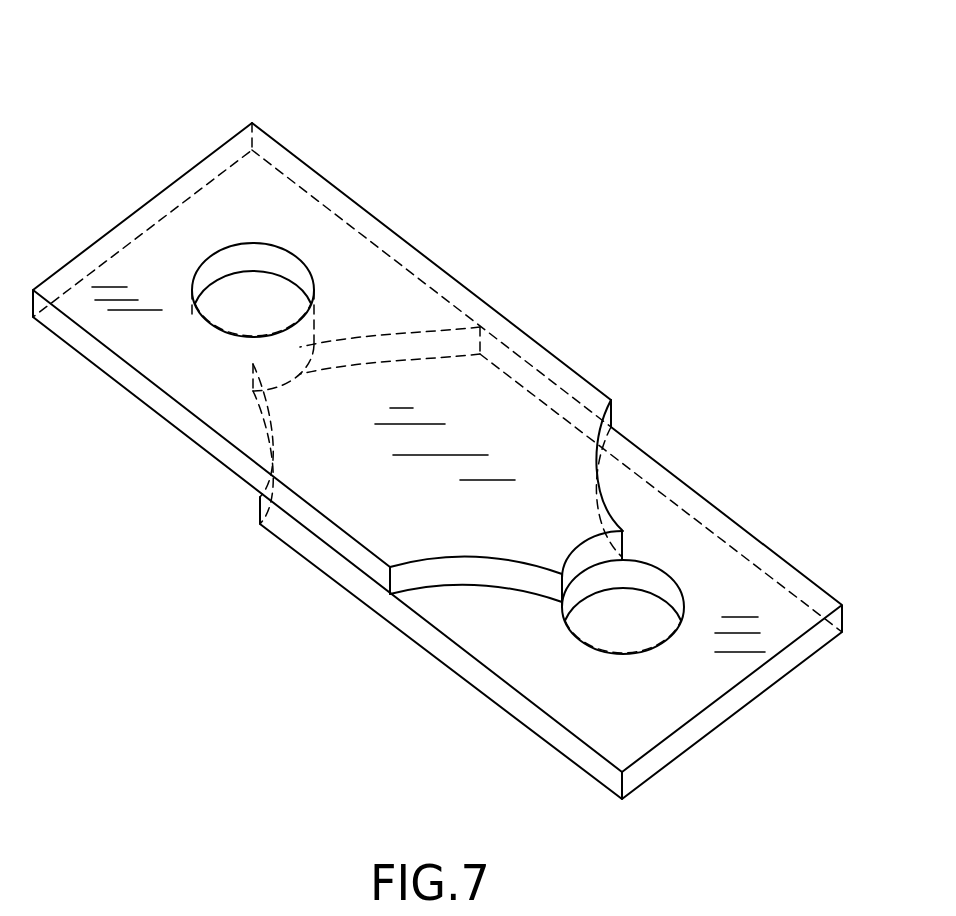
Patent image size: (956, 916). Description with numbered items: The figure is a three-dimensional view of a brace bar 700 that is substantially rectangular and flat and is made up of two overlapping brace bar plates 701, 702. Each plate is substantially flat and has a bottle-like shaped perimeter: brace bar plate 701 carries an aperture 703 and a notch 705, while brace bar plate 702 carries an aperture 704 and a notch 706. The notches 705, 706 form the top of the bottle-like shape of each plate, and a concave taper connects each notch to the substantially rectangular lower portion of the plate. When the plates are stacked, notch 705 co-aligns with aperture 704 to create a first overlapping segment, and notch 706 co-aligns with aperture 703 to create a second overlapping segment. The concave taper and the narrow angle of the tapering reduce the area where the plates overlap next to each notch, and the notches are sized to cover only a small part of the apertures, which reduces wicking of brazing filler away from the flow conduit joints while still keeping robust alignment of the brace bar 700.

The brace bar 700 is at (435, 409).
The brace bar plate 701 is at (385, 444).
The brace bar plate 702 is at (547, 514).
The aperture 703 is at (283, 262).
The aperture 704 is at (663, 588).
The notch 705 is at (590, 553).
The notch 706 is at (302, 360).